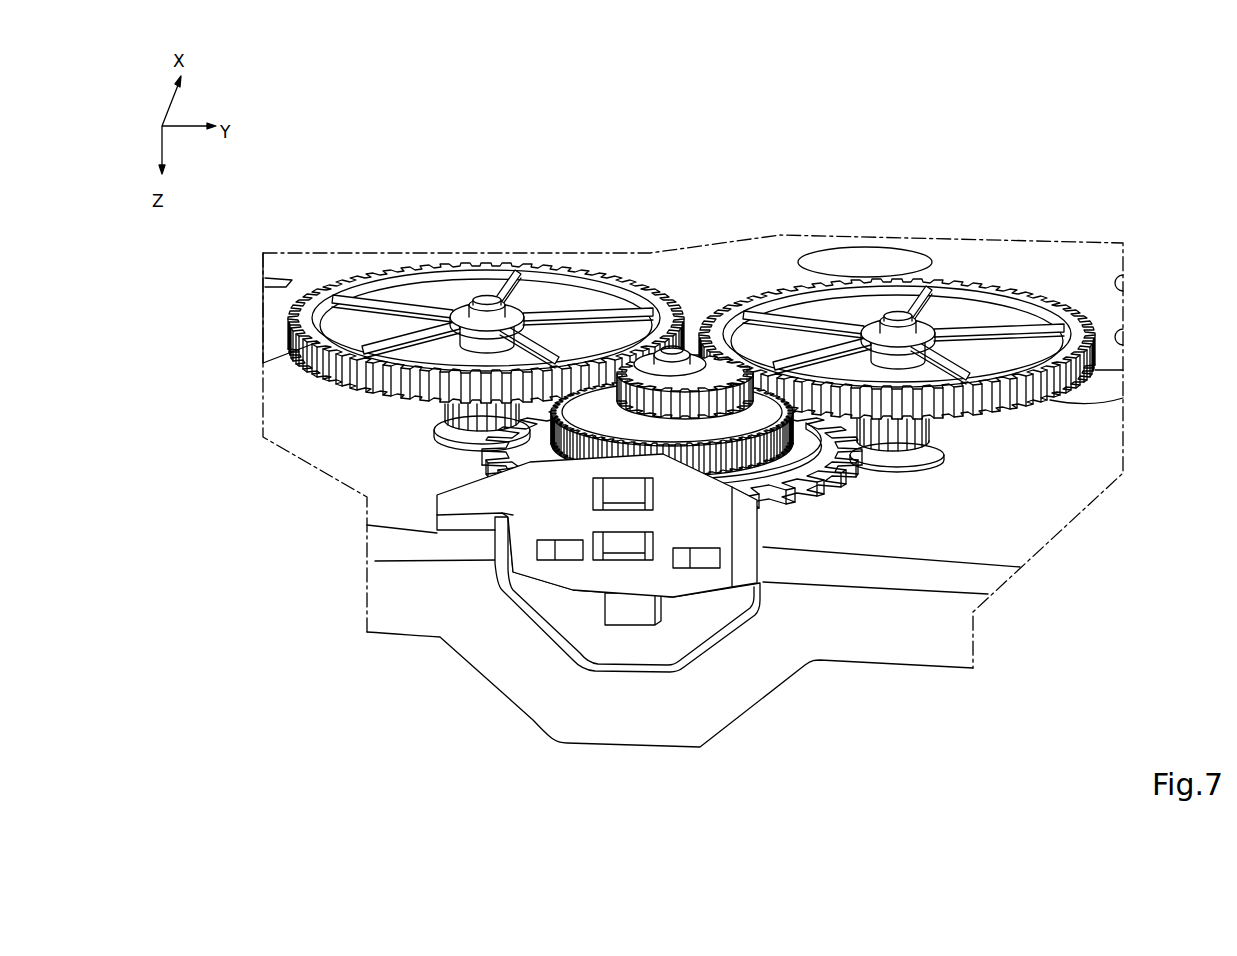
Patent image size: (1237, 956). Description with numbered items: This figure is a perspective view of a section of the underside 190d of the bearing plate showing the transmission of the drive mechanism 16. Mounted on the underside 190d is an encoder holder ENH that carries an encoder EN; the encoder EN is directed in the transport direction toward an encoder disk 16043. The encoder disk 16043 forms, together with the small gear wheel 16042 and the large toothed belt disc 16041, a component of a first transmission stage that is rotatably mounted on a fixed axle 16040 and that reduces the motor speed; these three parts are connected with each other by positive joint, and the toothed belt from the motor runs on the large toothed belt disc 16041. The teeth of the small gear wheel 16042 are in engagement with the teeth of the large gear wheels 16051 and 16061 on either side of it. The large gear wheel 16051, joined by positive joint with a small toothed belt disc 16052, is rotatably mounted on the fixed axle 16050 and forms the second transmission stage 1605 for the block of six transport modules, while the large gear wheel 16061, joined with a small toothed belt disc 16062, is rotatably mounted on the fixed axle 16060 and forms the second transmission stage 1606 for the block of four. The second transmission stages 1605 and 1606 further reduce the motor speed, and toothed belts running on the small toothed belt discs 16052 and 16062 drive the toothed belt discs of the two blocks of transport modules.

The drive mechanism 16 is at (1098, 207).
The second transmission stage 1606 is at (645, 268).
The second transmission stage 1605 is at (1085, 262).
The fixed bearing axle 16060 is at (292, 314).
The large gear wheel 16061 is at (292, 357).
The small toothed belt disc 16062 is at (443, 420).
The fixed bearing axle 16050 is at (1007, 293).
The large gear wheel 16051 is at (1090, 383).
The small toothed belt disc 16052 is at (947, 445).
The fixed bearing axle 16040 is at (700, 345).
The large toothed belt disc 16041 is at (483, 457).
The small gear wheel 16042 is at (837, 482).
The encoder disk 16043 is at (857, 470).
The underside of the bearing plate 190d is at (1083, 449).
The encoder holder ENH is at (620, 590).
The encoder EN is at (627, 608).